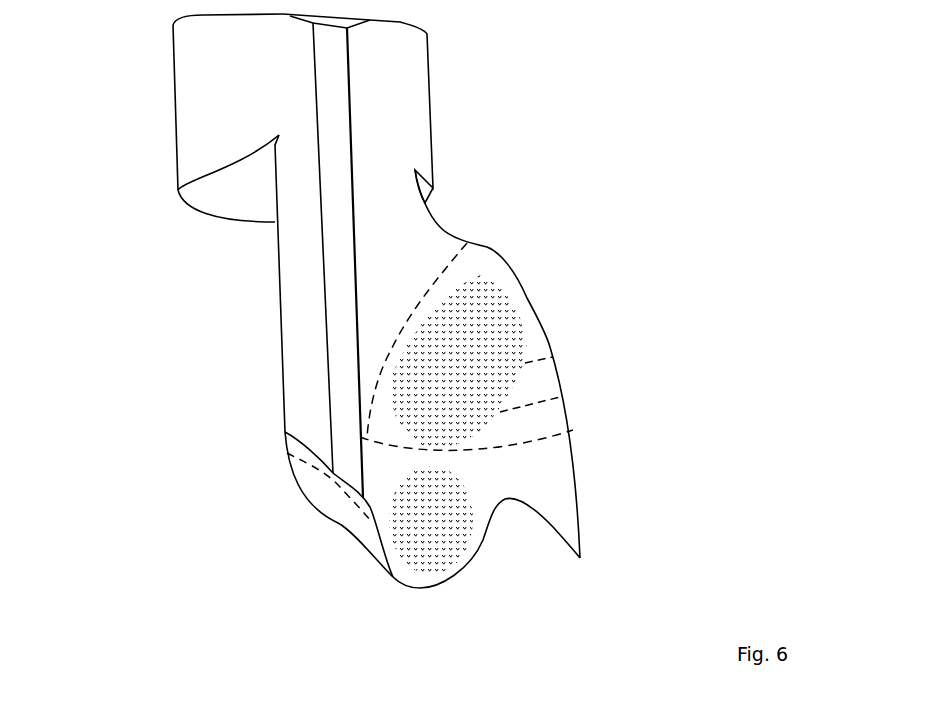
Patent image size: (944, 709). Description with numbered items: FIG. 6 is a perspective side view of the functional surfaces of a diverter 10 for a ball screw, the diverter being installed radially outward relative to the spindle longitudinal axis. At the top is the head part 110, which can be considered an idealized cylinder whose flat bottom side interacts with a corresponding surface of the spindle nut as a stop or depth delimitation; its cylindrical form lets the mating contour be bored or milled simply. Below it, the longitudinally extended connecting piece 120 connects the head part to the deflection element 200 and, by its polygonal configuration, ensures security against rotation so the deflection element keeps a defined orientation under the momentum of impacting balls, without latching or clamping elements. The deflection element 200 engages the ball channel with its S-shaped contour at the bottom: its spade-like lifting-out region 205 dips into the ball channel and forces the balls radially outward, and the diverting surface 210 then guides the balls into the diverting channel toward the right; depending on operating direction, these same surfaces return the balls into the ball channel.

The diverter 10 is at (625, 109).
The head part 110 is at (242, 97).
The connecting piece 120 is at (308, 332).
The deflection element 200 is at (535, 428).
The spade-like lifting-out region 205 is at (427, 532).
The diverting surface 210 is at (472, 350).